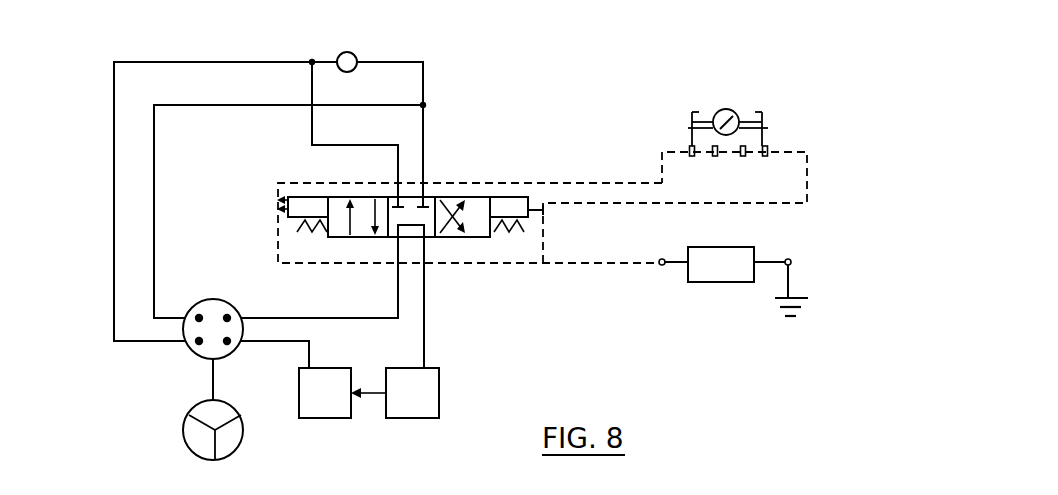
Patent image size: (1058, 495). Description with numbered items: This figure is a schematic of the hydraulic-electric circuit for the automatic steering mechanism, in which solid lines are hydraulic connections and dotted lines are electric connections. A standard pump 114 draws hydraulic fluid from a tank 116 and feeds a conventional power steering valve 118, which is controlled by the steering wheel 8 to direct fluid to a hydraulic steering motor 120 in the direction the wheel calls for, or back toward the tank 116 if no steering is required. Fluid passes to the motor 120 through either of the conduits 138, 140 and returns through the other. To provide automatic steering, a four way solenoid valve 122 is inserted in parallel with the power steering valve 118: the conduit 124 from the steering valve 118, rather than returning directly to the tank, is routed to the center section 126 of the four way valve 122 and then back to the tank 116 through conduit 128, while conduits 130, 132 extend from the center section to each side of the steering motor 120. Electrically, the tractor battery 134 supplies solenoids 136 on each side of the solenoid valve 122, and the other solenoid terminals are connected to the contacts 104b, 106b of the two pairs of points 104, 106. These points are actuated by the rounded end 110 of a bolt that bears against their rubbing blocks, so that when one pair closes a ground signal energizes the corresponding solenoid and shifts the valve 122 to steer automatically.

The steering wheel 8 is at (190, 450).
The points 104 is at (688, 110).
The inner fixed contact 104b is at (715, 158).
The points 106 is at (767, 110).
The inner fixed contact 106b is at (743, 158).
The rounded end 110 is at (727, 109).
The pump 114 is at (324, 420).
The tank 116 is at (440, 390).
The power steering valve 118 is at (213, 300).
The hydraulic steering motor 120 is at (351, 52).
The four way solenoid valve 122 is at (542, 225).
The conduit 124 is at (298, 318).
The center section 126 is at (396, 238).
The conduit 128 is at (426, 323).
The conduit 130 is at (336, 145).
The conduit 132 is at (425, 133).
The tractor battery 134 is at (730, 283).
The solenoids 136 is at (312, 197).
The conduit 138 is at (114, 252).
The conduit 140 is at (155, 258).